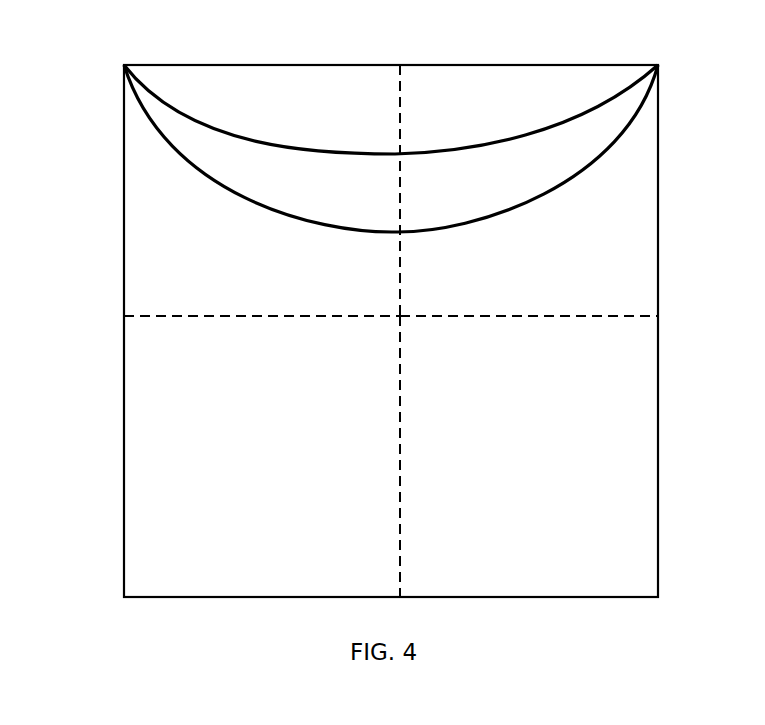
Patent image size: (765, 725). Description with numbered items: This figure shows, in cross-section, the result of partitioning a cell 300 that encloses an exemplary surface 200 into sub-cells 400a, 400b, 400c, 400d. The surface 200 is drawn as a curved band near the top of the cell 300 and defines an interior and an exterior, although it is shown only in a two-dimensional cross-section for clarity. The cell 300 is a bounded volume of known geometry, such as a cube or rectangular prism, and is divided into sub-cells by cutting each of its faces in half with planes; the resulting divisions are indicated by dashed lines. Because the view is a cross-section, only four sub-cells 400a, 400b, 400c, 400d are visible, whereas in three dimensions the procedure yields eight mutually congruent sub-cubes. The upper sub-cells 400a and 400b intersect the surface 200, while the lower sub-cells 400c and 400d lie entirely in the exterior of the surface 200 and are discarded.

The surface 200 is at (200, 174).
The cell 300 is at (124, 364).
The sub-cell 400a is at (292, 286).
The sub-cell 400b is at (558, 286).
The sub-cell 400c is at (558, 552).
The sub-cell 400d is at (292, 552).